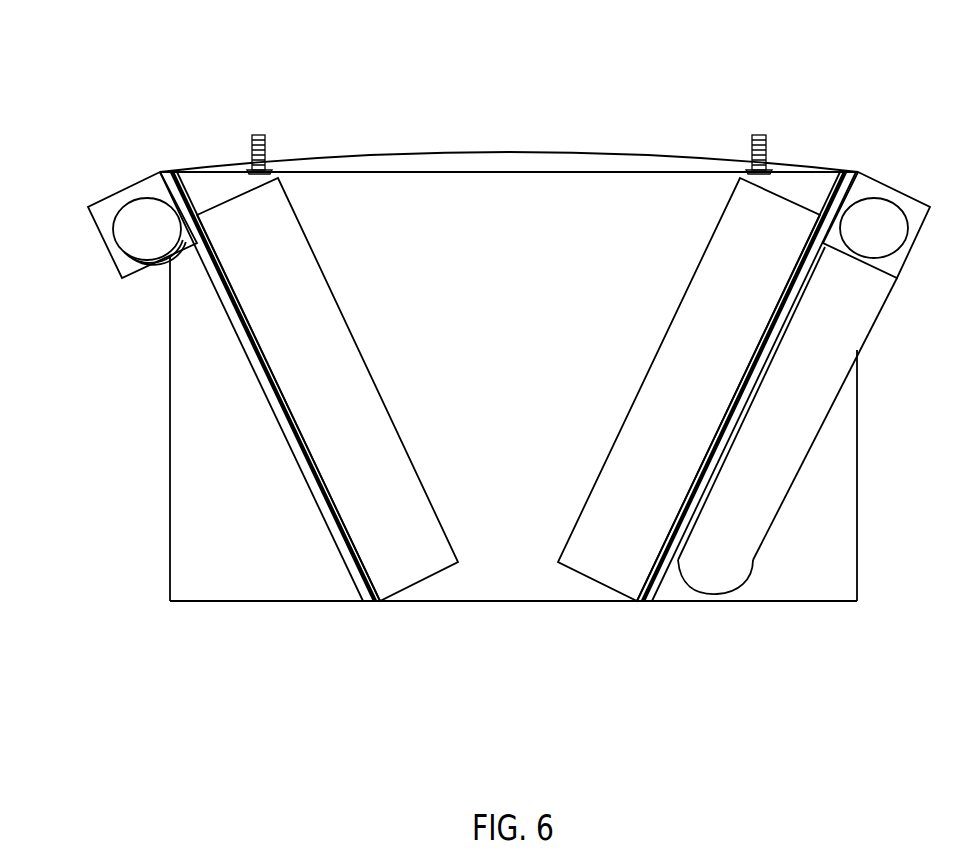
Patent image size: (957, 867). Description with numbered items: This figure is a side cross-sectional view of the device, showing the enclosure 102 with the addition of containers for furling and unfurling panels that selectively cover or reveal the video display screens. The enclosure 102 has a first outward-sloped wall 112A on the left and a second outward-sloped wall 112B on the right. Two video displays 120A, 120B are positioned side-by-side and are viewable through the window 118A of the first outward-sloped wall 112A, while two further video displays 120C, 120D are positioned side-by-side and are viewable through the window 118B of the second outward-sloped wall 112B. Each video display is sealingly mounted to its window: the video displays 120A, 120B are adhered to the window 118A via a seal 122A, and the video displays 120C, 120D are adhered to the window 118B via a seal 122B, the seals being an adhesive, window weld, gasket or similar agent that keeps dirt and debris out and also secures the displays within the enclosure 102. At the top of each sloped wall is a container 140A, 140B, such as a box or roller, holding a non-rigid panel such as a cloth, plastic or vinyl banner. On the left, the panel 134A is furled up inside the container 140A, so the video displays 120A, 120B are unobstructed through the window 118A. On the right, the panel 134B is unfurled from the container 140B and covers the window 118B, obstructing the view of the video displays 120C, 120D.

The enclosure 102 is at (518, 110).
The first outward-sloped wall 112A is at (397, 605).
The second outward-sloped wall 112B is at (626, 605).
The window 118A is at (288, 442).
The window 118B is at (660, 592).
The video display 120A is at (327, 389).
The video display 120B is at (330, 303).
The video display 120C is at (686, 389).
The video display 120D is at (668, 345).
The seal 122A is at (270, 356).
The seal 122B is at (746, 376).
The panel 134A is at (113, 242).
The panel 134B is at (805, 455).
The container 140A is at (111, 201).
The container 140B is at (882, 193).